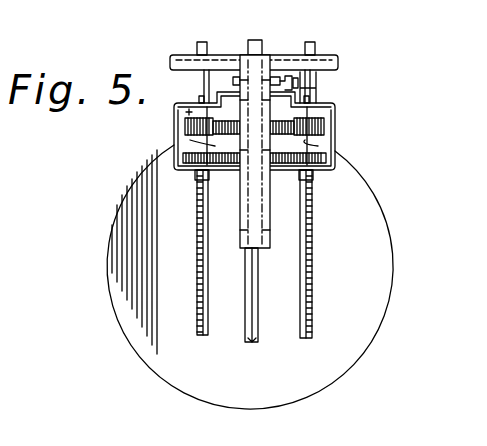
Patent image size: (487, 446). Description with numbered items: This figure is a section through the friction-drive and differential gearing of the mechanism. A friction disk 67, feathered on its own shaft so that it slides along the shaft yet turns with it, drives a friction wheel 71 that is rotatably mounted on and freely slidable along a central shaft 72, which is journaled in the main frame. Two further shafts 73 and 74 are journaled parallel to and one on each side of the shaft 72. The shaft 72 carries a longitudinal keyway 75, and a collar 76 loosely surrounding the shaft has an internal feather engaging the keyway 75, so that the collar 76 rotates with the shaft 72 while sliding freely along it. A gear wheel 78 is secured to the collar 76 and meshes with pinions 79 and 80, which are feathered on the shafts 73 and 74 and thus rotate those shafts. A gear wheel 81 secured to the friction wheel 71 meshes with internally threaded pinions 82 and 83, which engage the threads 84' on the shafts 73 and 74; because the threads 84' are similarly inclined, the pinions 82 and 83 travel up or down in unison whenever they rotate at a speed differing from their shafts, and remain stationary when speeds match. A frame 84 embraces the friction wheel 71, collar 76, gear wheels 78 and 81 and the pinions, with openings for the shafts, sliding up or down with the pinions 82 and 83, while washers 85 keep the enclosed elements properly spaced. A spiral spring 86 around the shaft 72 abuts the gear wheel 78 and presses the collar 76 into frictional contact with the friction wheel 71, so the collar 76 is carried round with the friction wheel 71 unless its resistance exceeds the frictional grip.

The friction disk 67 is at (352, 167).
The friction wheel 71 is at (272, 138).
The shaft 72 is at (259, 276).
The shaft 73 is at (197, 75).
The shaft 74 is at (318, 44).
The keyway 75 is at (250, 310).
The collar 76 is at (190, 144).
The gear wheel 78 is at (308, 103).
The pinion 79 is at (190, 125).
The pinion 80 is at (333, 130).
The gear wheel 81 is at (302, 174).
The pinion 82 is at (173, 150).
The pinion 83 is at (320, 158).
The frame 84 is at (235, 87).
The threads 84' is at (255, 254).
The washers 85 is at (185, 112).
The spiral spring 86 is at (317, 92).